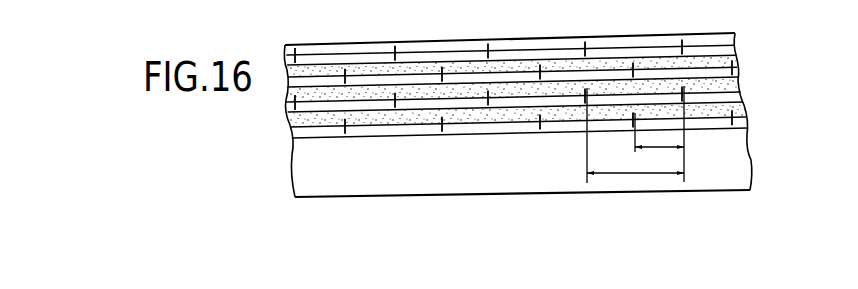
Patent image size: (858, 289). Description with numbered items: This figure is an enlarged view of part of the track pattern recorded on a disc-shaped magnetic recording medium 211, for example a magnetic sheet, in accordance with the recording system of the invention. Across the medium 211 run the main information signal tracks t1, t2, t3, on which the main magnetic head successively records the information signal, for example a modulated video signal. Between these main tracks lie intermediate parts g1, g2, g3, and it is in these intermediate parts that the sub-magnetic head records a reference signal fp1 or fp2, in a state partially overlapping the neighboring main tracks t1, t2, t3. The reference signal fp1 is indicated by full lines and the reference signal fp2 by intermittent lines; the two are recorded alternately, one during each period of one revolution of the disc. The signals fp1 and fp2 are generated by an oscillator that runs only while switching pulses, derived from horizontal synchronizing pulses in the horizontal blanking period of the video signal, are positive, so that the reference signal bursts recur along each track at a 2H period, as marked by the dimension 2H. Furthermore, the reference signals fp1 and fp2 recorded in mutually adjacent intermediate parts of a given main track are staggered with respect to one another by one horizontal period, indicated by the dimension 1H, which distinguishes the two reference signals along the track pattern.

The disc-shaped magnetic recording medium 211 is at (378, 44).
The intermediate part g1 is at (736, 42).
The main track t1 is at (728, 61).
The intermediate part g2 is at (742, 74).
The main track t2 is at (741, 88).
The intermediate part g3 is at (745, 102).
The main track t3 is at (748, 113).
The reference signal fp1 is at (587, 48).
The reference signal fp2 is at (541, 72).
The stagger of one horizontal period 1H is at (661, 148).
The recording period of two horizontal periods 2H is at (635, 134).